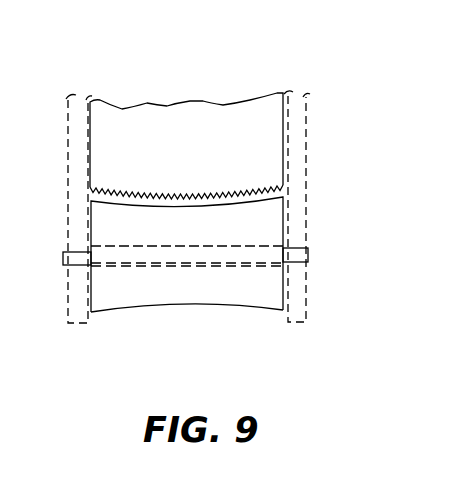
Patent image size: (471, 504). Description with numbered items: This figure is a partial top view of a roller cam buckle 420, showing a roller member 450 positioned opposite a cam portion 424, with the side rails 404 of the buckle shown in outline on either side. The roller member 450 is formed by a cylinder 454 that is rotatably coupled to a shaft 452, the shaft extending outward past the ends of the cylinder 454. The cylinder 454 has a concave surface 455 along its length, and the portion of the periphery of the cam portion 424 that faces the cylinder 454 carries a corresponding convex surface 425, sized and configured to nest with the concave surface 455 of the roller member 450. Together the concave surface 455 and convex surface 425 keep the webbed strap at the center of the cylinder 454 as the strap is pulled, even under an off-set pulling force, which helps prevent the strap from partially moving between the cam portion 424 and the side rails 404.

The side rails 404 is at (310, 119).
The gripping assembly 420 is at (239, 126).
The cam portion 424 is at (258, 160).
The convex surface 425 is at (253, 196).
The roller member 450 is at (216, 297).
The shaft 452 is at (308, 256).
The cylinder 454 is at (263, 292).
The concave surface 455 is at (170, 305).